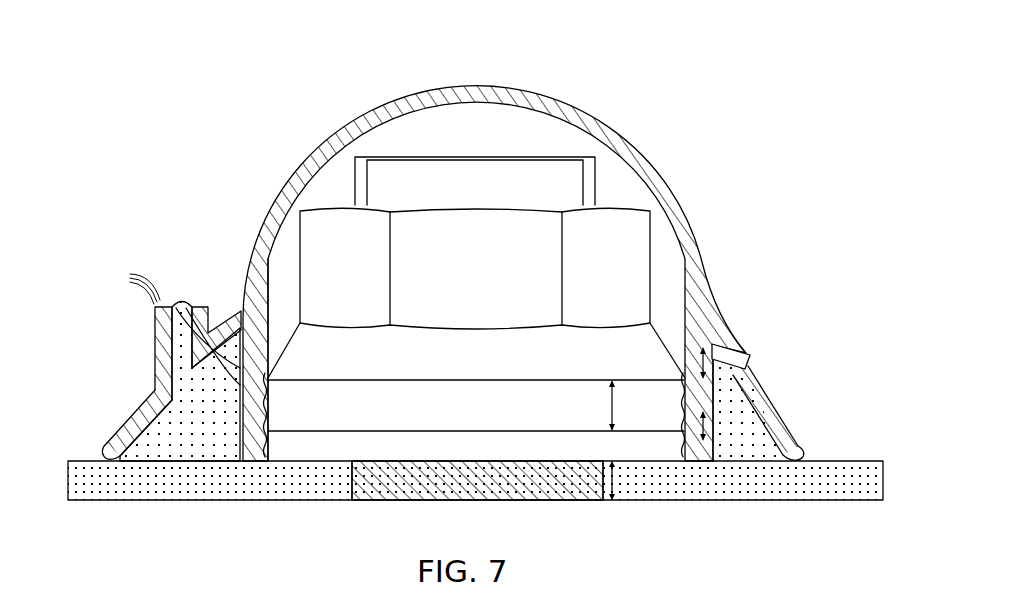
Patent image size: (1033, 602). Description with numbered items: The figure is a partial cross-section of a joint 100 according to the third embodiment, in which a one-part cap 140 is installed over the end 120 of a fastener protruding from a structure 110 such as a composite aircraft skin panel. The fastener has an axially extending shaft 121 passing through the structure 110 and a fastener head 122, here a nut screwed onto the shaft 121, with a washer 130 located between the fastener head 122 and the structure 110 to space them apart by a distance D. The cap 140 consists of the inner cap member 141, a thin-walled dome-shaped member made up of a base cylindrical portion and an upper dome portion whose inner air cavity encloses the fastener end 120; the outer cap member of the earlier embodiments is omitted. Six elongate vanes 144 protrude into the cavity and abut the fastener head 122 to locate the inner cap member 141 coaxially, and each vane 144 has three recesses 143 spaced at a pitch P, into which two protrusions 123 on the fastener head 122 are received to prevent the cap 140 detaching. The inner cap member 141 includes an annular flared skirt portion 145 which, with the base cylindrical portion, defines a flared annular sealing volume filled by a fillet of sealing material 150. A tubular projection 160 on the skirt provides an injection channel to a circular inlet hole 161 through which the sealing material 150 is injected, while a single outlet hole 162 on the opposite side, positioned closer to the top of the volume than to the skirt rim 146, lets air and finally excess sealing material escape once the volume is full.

The joint 100 is at (463, 279).
The structure 110 is at (333, 502).
The fastener end 120 is at (660, 237).
The shaft 121 is at (566, 175).
The fastener head 122 is at (625, 305).
The protrusions 123 is at (273, 415).
The washer 130 is at (320, 450).
The cap 140 is at (275, 116).
The inner cap member 141 is at (250, 282).
The recesses 143 is at (121, 285).
The vanes 144 is at (238, 322).
The flared skirt portion 145 is at (123, 423).
The skirt rim 146 is at (110, 453).
The sealing material 150 is at (200, 452).
The tubular projection 160 is at (157, 342).
The inlet hole 161 is at (183, 390).
The outlet hole 162 is at (752, 356).